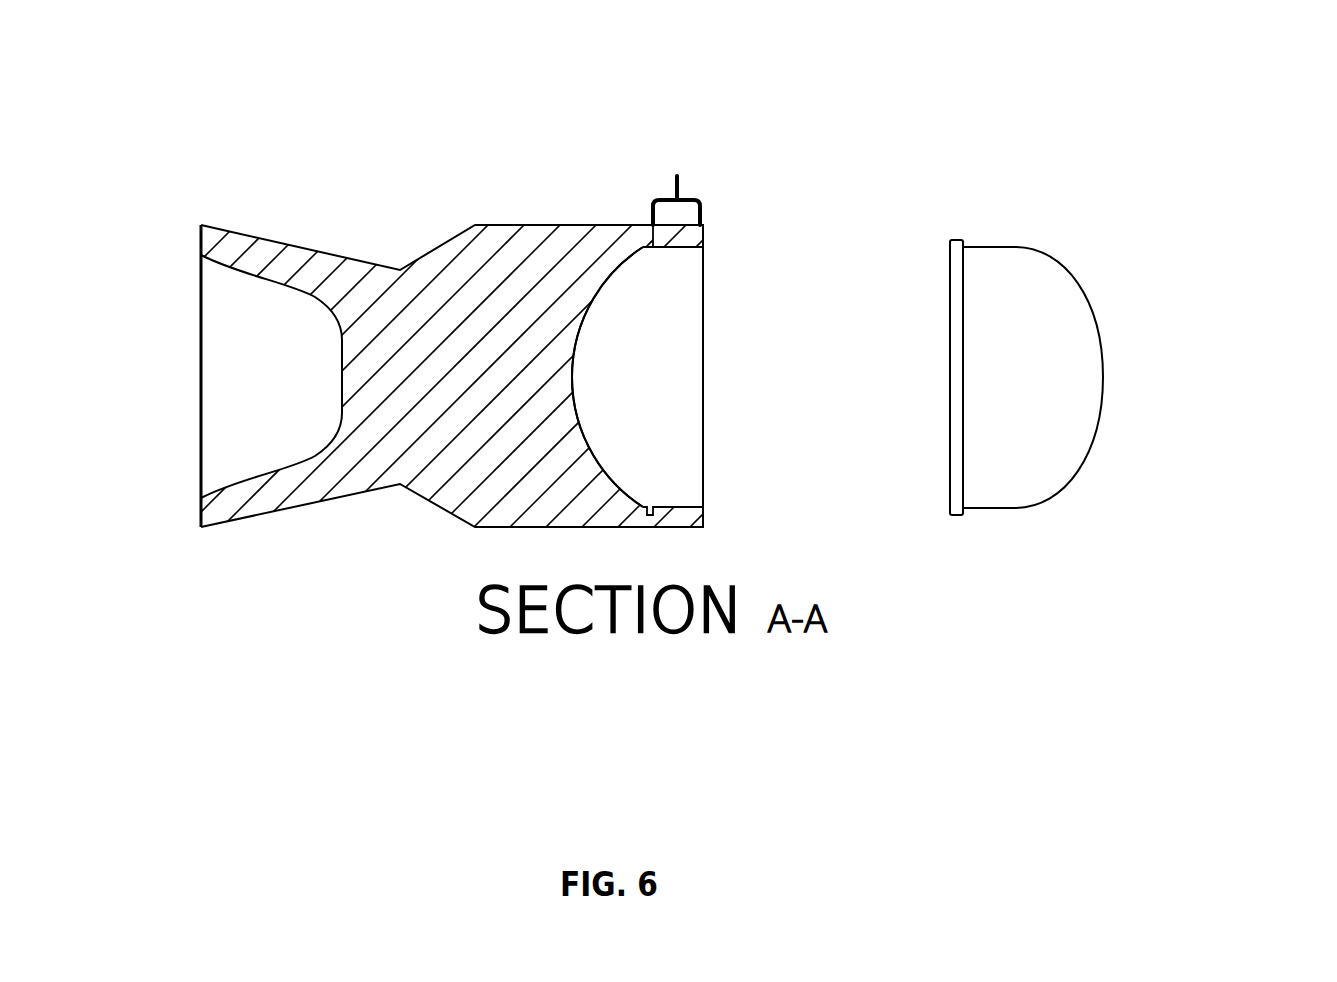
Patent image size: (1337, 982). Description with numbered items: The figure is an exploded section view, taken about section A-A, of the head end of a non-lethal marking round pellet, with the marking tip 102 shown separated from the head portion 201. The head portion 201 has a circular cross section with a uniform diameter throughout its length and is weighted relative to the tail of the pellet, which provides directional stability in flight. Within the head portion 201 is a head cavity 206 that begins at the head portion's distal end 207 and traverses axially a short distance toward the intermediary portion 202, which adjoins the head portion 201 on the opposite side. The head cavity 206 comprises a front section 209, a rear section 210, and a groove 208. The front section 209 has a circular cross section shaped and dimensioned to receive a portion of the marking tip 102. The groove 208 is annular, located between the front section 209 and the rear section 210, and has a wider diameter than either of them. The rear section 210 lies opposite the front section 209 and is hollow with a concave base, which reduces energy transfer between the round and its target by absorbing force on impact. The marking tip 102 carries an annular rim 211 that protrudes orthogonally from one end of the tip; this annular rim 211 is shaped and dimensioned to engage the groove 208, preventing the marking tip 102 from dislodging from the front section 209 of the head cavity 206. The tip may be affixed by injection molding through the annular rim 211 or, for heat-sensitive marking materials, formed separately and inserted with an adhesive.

The marking tip 102 is at (1082, 462).
The head portion 201 is at (677, 522).
The intermediary portion 202 is at (435, 495).
The head cavity 206 is at (674, 364).
The distal end 207 is at (703, 295).
The groove 208 is at (645, 246).
The front section 209 is at (676, 178).
The rear section 210 is at (583, 318).
The annular rim 211 is at (955, 512).